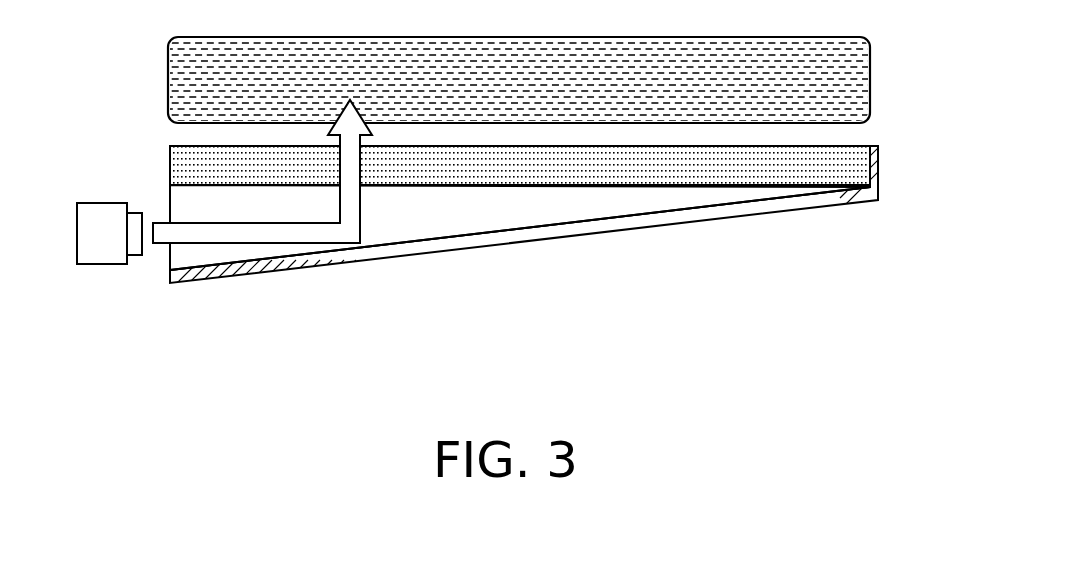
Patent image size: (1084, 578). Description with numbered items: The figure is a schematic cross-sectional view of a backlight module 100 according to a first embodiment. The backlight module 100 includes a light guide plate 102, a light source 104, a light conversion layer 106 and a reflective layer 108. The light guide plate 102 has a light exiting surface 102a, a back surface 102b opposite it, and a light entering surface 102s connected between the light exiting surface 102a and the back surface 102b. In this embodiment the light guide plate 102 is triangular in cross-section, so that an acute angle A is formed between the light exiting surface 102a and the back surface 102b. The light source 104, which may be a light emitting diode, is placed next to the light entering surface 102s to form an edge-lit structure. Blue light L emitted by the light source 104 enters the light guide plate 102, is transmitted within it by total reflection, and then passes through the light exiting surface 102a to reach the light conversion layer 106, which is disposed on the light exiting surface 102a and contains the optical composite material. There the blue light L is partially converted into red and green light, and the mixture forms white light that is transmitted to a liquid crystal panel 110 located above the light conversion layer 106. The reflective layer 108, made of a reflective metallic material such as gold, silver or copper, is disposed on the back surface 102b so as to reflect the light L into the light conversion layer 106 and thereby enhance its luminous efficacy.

The backlight module 100 is at (500, 249).
The light guide plate 102 is at (417, 230).
The light exiting surface 102a is at (202, 184).
The back surface 102b is at (213, 267).
The light entering surface 102s is at (168, 193).
The light source 104 is at (102, 253).
The light conversion layer 106 is at (853, 168).
The reflective layer 108 is at (500, 243).
The liquid crystal panel 110 is at (857, 82).
The light L is at (275, 233).
The acute angle A is at (712, 185).